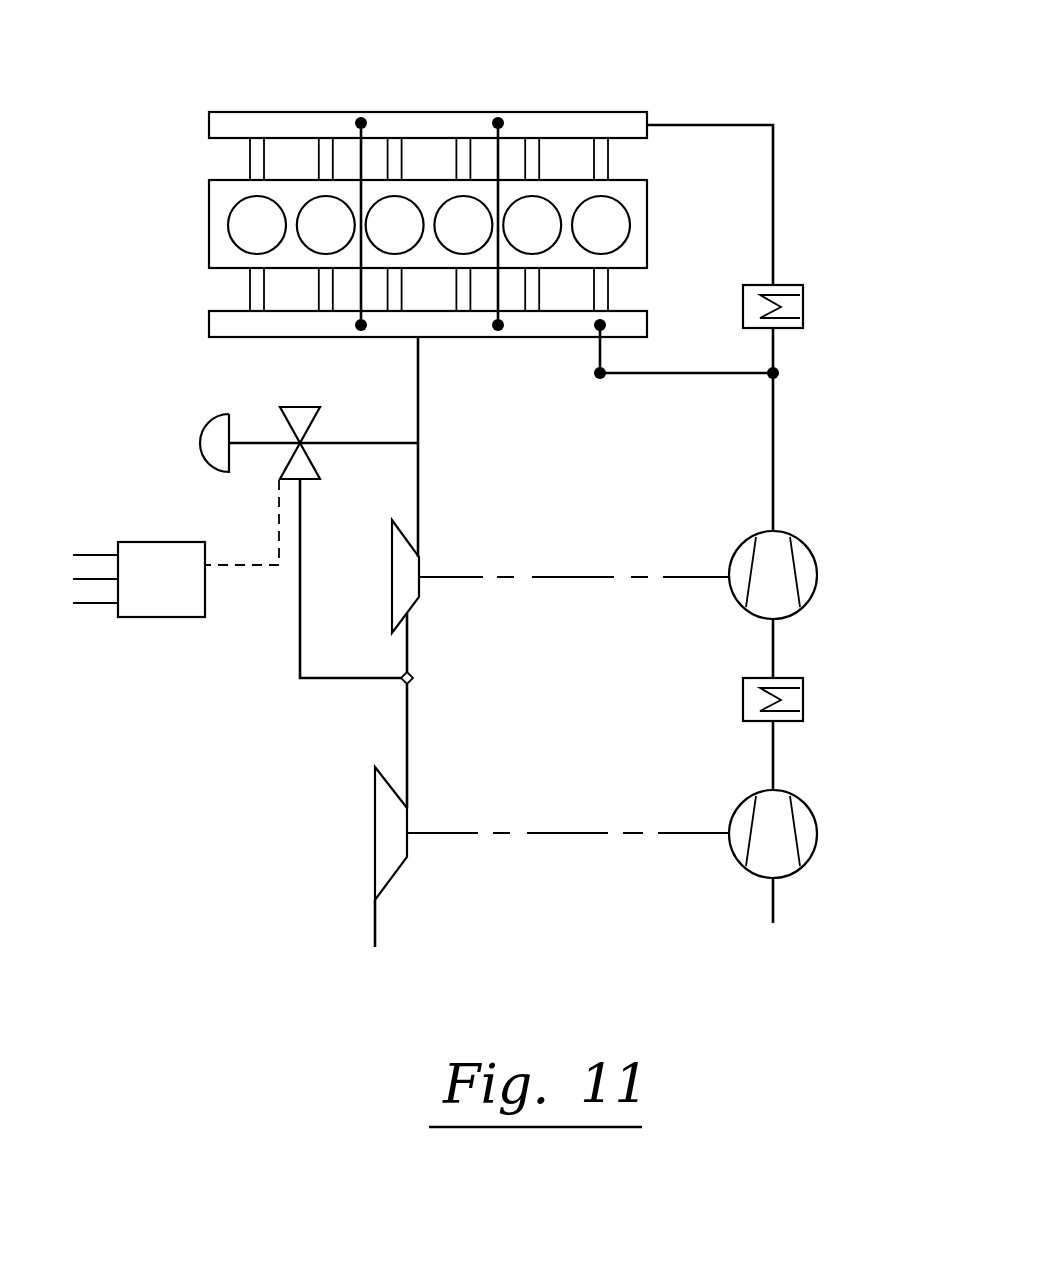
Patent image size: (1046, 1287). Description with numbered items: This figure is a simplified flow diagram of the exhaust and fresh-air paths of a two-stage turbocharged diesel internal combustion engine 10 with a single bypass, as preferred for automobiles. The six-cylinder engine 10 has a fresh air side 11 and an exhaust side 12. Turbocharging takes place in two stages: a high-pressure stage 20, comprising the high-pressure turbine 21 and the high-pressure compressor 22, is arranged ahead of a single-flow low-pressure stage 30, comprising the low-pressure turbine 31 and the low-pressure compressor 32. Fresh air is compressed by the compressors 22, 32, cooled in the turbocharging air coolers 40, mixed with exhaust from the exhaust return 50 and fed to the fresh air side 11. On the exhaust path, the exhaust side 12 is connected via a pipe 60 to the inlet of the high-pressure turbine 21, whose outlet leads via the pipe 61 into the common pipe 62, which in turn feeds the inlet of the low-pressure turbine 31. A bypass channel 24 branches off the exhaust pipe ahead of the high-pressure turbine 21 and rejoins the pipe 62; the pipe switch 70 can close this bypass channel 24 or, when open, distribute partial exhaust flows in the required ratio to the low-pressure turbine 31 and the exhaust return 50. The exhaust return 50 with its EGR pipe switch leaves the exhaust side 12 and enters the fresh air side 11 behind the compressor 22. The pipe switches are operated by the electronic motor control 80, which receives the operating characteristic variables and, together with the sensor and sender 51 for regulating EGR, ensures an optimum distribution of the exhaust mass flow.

The internal combustion engine 10 is at (485, 193).
The fresh air side 11 is at (580, 115).
The exhaust side 12 is at (643, 322).
The high-pressure stage 20 is at (571, 575).
The high-pressure turbine 21 is at (412, 590).
The high-pressure compressor 22 is at (812, 563).
The bypass channel 24 is at (298, 635).
The low-pressure stage 30 is at (570, 833).
The low-pressure turbine 31 is at (408, 857).
The low-pressure compressor 32 is at (816, 829).
The turbocharging air cooler 40 is at (803, 307).
The exhaust return with EGR pipe switch 50 is at (499, 298).
The sensor and sender for regulating EGR 51 is at (218, 466).
The pipe 60 is at (420, 403).
The pipe 61 is at (408, 643).
The pipe 62 is at (408, 742).
The pipe switch 70 is at (295, 407).
The motor control 80 is at (168, 617).